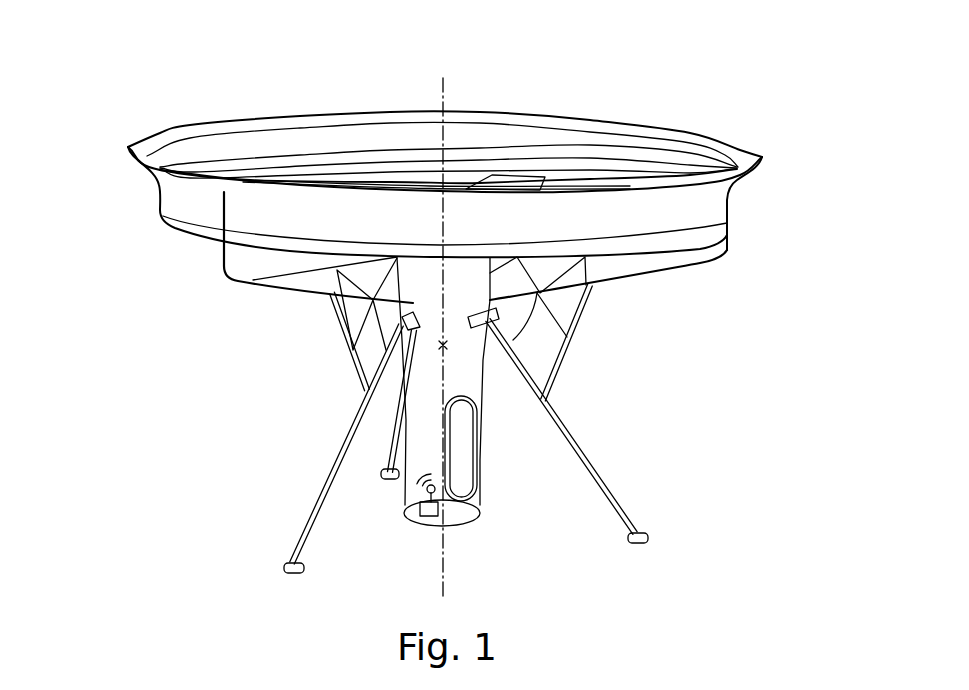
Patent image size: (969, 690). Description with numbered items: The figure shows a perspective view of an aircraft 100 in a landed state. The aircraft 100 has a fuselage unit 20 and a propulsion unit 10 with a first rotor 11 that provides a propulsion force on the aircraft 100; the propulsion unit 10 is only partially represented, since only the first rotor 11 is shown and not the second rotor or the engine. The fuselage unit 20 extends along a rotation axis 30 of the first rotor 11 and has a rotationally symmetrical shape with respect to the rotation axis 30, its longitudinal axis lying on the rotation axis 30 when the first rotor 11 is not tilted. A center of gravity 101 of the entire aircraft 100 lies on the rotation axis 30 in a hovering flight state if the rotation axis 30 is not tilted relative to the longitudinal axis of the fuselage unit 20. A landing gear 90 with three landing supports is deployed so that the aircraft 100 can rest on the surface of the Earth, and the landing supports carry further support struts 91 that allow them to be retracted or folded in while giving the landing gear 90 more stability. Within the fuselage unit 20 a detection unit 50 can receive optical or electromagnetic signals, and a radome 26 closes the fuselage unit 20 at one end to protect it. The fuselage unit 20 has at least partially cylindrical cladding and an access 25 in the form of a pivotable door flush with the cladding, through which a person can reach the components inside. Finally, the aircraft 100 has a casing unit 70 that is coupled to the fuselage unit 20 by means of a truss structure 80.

The aircraft 100 is at (115, 108).
The propulsion unit 10 is at (781, 116).
The first rotor 11 is at (545, 185).
The fuselage unit 20 is at (472, 360).
The access 25 is at (470, 462).
The radome 26 is at (453, 522).
The rotation axis 30 is at (437, 90).
The detection unit 50 is at (416, 497).
The casing unit 70 is at (167, 196).
The truss structure 80 is at (647, 293).
The landing gear 90 is at (383, 433).
The support struts 91 is at (343, 327).
The center of gravity 101 is at (403, 327).